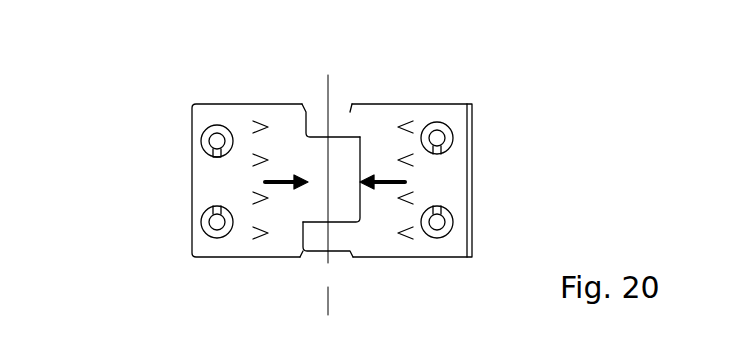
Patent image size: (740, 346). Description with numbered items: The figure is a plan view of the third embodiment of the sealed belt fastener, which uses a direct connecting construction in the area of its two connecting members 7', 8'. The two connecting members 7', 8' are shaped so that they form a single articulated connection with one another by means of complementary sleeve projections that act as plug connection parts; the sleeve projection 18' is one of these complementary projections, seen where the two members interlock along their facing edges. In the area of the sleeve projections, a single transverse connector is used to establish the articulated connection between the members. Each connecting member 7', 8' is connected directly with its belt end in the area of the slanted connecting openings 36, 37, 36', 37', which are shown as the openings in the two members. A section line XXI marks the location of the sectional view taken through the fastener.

The connecting member 7' is at (213, 180).
The connecting member 8' is at (437, 180).
The sleeve projection 18' is at (409, 142).
The slanted connecting opening 36 is at (499, 136).
The slanted connecting opening 36' is at (158, 145).
The slanted connecting opening 37 is at (499, 222).
The slanted connecting opening 37' is at (161, 244).
The section line XXI- XXI is at (327, 89).